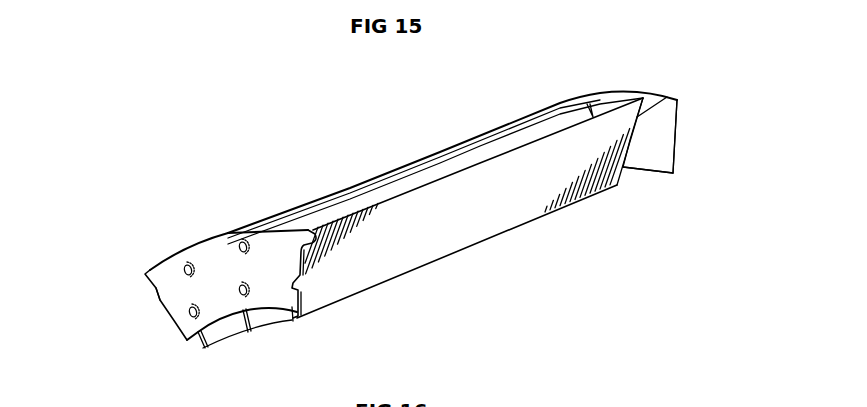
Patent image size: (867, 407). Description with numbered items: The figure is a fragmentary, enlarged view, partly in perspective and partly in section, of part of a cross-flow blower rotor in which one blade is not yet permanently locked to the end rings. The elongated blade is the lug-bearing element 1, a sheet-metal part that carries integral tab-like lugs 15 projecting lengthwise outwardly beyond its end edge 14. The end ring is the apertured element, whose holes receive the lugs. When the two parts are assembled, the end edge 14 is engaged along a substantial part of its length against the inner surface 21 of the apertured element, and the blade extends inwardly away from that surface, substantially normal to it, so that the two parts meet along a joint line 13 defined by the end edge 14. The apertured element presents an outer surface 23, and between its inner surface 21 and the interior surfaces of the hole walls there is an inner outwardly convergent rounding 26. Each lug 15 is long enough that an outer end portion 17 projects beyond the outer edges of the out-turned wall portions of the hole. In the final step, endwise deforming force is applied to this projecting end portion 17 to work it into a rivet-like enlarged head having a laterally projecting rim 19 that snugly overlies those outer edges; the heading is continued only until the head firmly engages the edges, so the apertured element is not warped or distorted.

The lug-bearing element 1 is at (488, 162).
The joint line 13 is at (628, 135).
The end edge 14 is at (293, 314).
The tab-like lug 15 is at (310, 247).
The outer end portion of the lug 17 is at (295, 293).
The laterally projecting rim 19 is at (239, 250).
The inner surface 21 is at (642, 157).
The outer surface 23 is at (164, 291).
The inner outwardly convergent rounding 26 is at (662, 100).